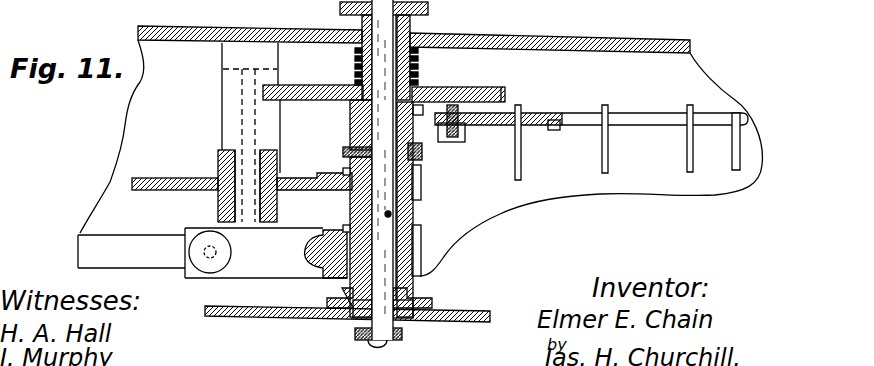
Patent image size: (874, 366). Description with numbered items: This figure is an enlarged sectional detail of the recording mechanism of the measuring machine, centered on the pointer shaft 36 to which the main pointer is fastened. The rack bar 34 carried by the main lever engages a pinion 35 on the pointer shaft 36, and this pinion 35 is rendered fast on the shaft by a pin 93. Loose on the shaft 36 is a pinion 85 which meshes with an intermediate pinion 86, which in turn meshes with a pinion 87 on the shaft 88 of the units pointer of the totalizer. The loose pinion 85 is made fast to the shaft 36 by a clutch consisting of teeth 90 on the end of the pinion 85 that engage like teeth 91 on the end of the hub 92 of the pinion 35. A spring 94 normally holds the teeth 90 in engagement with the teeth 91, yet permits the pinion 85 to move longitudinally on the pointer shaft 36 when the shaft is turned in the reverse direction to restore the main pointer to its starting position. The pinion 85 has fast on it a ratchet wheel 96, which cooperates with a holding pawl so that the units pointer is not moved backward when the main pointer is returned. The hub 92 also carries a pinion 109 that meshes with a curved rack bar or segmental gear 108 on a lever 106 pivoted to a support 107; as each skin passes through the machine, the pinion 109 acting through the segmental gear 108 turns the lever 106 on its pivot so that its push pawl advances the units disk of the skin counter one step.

The rack bar 34 is at (306, 250).
The pinion 35 is at (421, 238).
The pointer shaft 36 is at (366, 325).
The pinion 85 is at (350, 128).
The intermediate pinion 86 is at (478, 127).
The pinion 87 is at (541, 127).
The shaft 88 is at (515, 165).
The teeth 90 is at (350, 149).
The teeth 91 is at (420, 160).
The hub 92 is at (351, 213).
The pin 93 is at (392, 216).
The spring 94 is at (420, 64).
The ratchet wheel 96 is at (323, 85).
The lever 106 is at (152, 190).
The support 107 is at (218, 212).
The segmental gear 108 is at (348, 176).
The pinion 109 is at (421, 188).